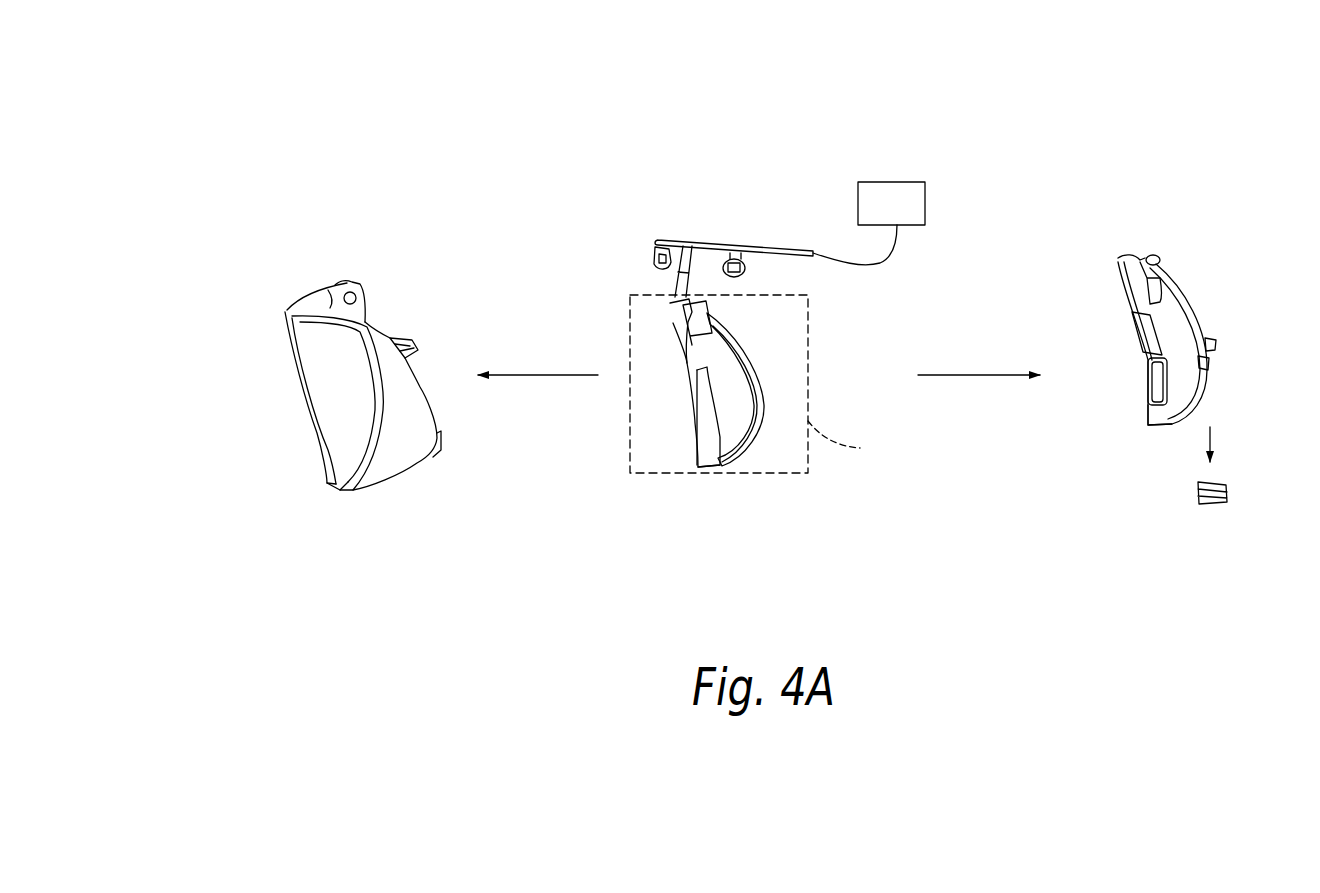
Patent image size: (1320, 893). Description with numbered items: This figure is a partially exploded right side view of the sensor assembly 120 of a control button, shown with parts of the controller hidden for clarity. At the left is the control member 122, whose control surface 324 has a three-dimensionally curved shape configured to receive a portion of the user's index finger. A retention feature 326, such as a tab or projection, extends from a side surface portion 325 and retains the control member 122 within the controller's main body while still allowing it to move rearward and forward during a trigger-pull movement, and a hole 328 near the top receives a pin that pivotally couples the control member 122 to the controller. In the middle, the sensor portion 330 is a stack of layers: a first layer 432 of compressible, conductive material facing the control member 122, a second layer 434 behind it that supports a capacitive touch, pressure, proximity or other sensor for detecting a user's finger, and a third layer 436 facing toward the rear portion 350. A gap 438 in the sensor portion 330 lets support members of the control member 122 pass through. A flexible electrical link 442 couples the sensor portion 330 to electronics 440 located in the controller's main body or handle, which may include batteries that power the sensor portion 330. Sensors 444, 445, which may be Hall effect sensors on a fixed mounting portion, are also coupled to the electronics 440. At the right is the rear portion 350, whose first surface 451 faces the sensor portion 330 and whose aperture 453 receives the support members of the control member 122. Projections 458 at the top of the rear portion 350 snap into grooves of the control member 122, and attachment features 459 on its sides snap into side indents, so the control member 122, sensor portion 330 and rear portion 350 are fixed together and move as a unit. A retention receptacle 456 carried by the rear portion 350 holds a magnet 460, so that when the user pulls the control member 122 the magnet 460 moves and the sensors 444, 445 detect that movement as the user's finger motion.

The sensor assembly 120 is at (236, 152).
The control member 122 is at (299, 270).
The control surface 324 is at (320, 408).
The side surface portion 325 is at (400, 460).
The retention feature 326 is at (402, 338).
The hole 328 is at (358, 285).
The sensor portion 330 is at (664, 342).
The first layer 432 is at (720, 358).
The second layer 434 is at (750, 395).
The third layer 436 is at (763, 380).
The gap 438 is at (718, 472).
The electronics 440 is at (890, 182).
The flexible electrical link 442 is at (670, 290).
The sensor 444 is at (662, 240).
The sensor 445 is at (735, 250).
The rear portion 350 is at (1209, 257).
The first surface 451 is at (1160, 418).
The aperture 453 is at (1150, 380).
The retention receptacle 456 is at (1216, 342).
The projection 458 is at (1150, 255).
The attachment feature 459 is at (1210, 362).
The magnet 460 is at (1228, 493).